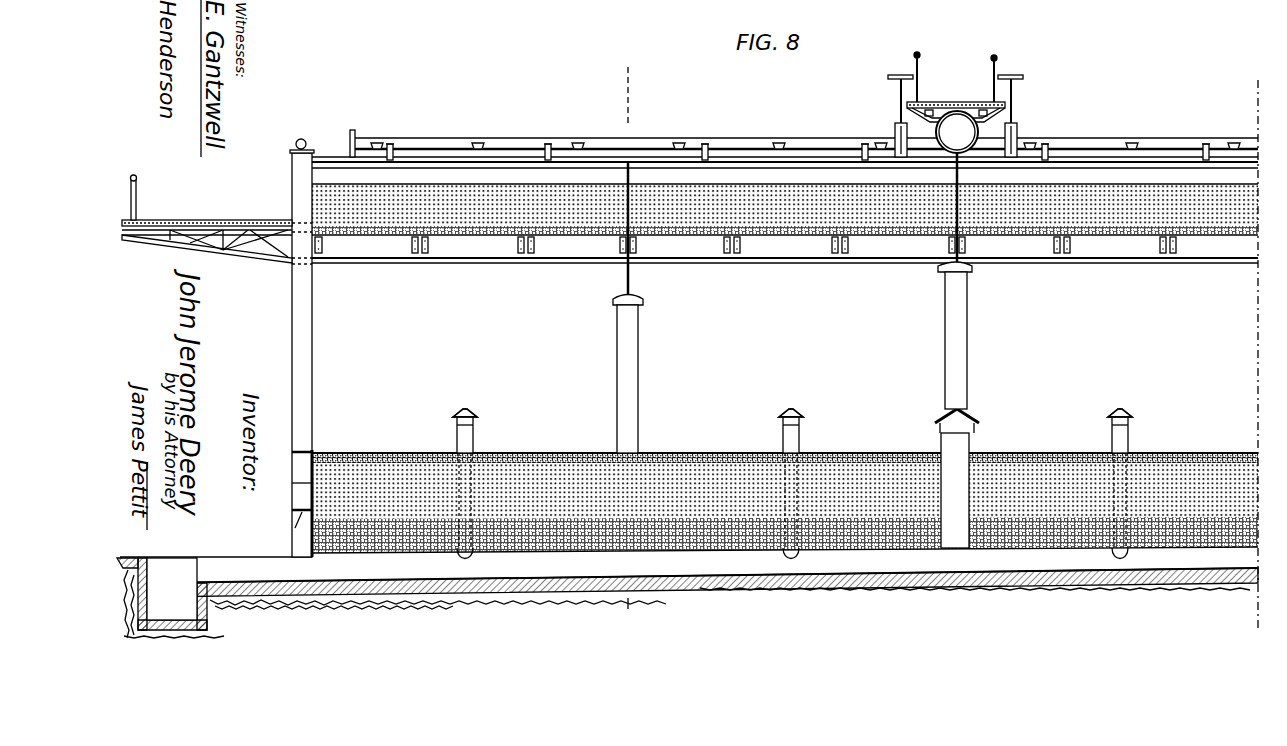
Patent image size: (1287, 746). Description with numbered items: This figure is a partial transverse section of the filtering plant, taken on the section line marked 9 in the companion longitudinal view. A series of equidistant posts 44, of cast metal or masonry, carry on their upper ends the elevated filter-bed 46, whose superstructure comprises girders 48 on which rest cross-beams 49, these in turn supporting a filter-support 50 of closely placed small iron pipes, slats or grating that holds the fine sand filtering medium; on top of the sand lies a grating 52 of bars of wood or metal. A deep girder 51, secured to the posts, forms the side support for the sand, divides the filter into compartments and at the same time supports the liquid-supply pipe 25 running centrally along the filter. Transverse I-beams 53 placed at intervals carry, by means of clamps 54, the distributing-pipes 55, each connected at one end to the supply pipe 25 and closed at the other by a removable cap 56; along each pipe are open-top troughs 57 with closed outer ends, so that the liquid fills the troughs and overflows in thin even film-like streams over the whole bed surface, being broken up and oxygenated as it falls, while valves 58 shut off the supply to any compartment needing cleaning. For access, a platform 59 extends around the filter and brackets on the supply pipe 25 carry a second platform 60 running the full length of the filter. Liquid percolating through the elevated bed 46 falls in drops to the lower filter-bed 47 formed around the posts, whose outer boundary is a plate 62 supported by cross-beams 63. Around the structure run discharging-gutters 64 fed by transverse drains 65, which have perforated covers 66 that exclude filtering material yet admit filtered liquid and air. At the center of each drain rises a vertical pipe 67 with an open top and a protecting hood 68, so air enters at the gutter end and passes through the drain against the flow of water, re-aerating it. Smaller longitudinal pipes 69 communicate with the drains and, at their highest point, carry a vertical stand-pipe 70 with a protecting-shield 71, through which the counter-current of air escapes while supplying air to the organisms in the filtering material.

The section line 9- 9 is at (627, 339).
The liquid-supply pipe 25 is at (957, 132).
The posts 44 is at (318, 325).
The elevated filter-bed 46 is at (785, 205).
The lower filter-bed 47 is at (785, 503).
The girders 48 is at (698, 259).
The cross-beams 49 is at (524, 256).
The filter-support 50 is at (447, 236).
The deep girder 51 is at (312, 183).
The roof sheathing 52 is at (485, 184).
The transverse I-beams 53 is at (314, 157).
The clamps 54 is at (549, 143).
The distributing-pipes 55 is at (641, 137).
The removable cap 56 is at (353, 129).
The open-top troughs 57 is at (479, 142).
The valves 58 is at (895, 132).
The platform 59 is at (240, 218).
The platform 60 is at (956, 87).
The plate 62 is at (292, 485).
The cross-beams 63 is at (294, 522).
The discharging-gutters 64 is at (170, 598).
The transverse drains 65 is at (702, 576).
The perforated covers 66 is at (238, 556).
The vertical pipe 67 is at (955, 490).
The protecting hood 68 is at (943, 412).
The longitudinal pipes 69 is at (474, 556).
The vertical stand-pipe 70 is at (457, 432).
The protecting-shield 71 is at (482, 404).